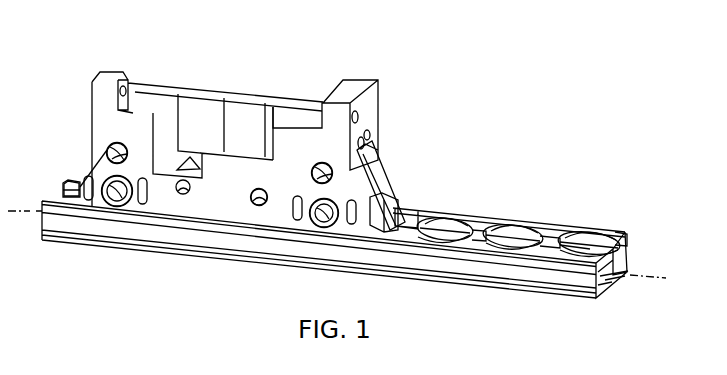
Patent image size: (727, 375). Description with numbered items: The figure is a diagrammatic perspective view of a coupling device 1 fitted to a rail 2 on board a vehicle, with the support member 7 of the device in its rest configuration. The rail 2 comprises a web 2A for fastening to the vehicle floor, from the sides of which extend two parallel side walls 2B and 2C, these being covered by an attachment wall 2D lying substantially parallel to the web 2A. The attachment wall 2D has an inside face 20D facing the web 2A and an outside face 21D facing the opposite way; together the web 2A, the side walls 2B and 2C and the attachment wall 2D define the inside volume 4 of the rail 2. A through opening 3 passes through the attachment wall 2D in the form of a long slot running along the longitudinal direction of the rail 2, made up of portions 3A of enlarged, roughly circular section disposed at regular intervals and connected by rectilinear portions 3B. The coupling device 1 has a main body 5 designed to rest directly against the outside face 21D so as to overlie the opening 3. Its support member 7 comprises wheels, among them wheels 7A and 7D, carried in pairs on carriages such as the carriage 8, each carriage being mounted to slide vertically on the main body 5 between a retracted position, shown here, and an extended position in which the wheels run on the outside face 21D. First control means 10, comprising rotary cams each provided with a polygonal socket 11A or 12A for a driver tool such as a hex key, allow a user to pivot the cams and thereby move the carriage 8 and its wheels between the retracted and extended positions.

The coupling device 1 is at (362, 80).
The rail 2 is at (107, 230).
The web 2A is at (620, 282).
The side wall 2B is at (588, 250).
The side wall 2C is at (623, 268).
The attachment wall 2D is at (557, 230).
The through opening 3 is at (439, 222).
The portions of enlarged section 3A is at (457, 228).
The rectilinear portions 3B is at (413, 216).
The inside volume 4 is at (630, 274).
The main body 5 is at (155, 90).
The support member 7 is at (127, 208).
The wheel 7A is at (317, 228).
The wheel 7D is at (118, 212).
The carriage 8 is at (373, 168).
The first control means 10 is at (113, 148).
The polygonal socket 11A is at (320, 184).
The polygonal socket 12A is at (107, 160).
The inside face 20D is at (596, 280).
The outside face 21D is at (487, 221).